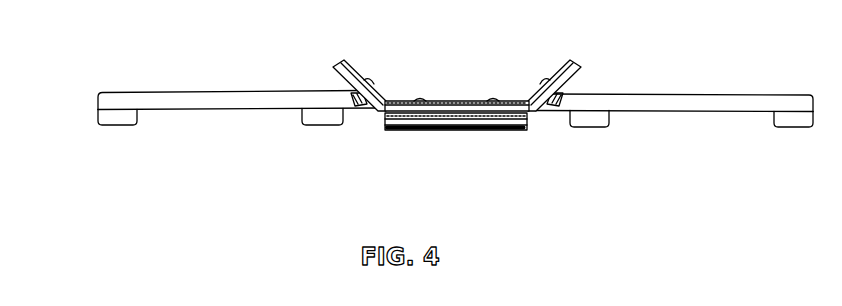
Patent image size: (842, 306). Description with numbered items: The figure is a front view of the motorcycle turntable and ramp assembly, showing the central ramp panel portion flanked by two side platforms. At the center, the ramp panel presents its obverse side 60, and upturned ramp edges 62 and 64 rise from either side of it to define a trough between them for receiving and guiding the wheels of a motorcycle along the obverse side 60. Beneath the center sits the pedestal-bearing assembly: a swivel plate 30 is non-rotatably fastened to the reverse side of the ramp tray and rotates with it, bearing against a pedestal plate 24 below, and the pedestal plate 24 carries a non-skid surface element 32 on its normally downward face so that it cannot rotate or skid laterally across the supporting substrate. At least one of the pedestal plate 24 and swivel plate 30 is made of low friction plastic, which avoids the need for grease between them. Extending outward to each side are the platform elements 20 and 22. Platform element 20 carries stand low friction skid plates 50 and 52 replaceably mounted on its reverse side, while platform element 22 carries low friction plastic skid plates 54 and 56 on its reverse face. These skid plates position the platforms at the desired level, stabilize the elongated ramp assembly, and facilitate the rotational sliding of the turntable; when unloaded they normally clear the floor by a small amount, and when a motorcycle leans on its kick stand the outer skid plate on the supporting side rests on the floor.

The platform element 20 is at (753, 94).
The platform element 22 is at (233, 91).
The pedestal plate 24 is at (502, 125).
The swivel plate 30 is at (390, 115).
The non-skid surface element 32 is at (417, 131).
The stand low friction skid plate 50 is at (797, 127).
The stand low friction skid plate 52 is at (592, 127).
The low friction plastic skid plate 54 is at (120, 125).
The low friction plastic skid plate 56 is at (320, 126).
The obverse side 60 is at (457, 101).
The upturned ramp edge 62 is at (563, 64).
The upturned ramp edge 64 is at (351, 64).